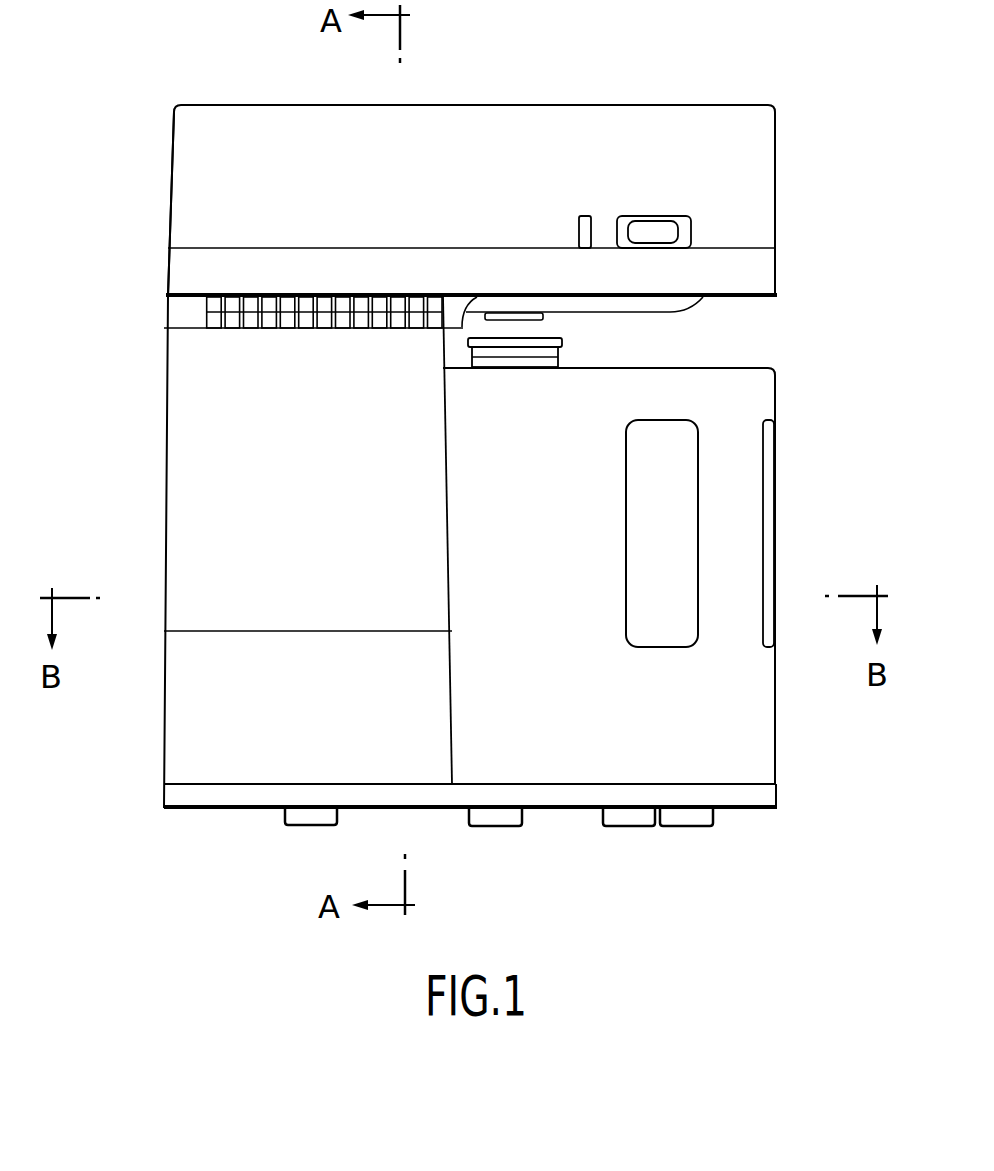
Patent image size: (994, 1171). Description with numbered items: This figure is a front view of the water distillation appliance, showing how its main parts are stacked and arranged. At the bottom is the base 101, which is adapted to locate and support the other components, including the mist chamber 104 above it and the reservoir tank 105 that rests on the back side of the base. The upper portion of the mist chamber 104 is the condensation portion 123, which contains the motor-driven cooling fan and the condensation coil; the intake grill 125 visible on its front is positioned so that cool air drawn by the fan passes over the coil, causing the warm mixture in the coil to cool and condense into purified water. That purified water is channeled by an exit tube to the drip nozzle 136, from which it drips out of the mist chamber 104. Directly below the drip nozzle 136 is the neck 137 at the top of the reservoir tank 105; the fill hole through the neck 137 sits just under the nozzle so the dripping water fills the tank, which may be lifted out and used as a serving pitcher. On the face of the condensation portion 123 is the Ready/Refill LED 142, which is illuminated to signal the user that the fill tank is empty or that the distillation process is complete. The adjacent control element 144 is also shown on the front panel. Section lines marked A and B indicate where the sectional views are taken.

The base 101 is at (182, 815).
The mist chamber 104 is at (160, 162).
The reservoir tank 105 is at (786, 401).
The condensation portion 123 is at (515, 100).
The intake grill 125 is at (205, 336).
The drip nozzle 136 is at (560, 320).
The neck 137 is at (575, 353).
The Ready/Refill LED 142 is at (602, 210).
The switch 144 is at (700, 211).